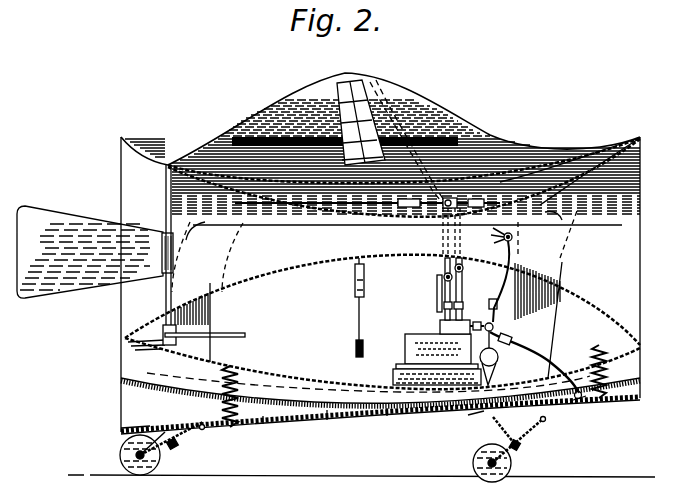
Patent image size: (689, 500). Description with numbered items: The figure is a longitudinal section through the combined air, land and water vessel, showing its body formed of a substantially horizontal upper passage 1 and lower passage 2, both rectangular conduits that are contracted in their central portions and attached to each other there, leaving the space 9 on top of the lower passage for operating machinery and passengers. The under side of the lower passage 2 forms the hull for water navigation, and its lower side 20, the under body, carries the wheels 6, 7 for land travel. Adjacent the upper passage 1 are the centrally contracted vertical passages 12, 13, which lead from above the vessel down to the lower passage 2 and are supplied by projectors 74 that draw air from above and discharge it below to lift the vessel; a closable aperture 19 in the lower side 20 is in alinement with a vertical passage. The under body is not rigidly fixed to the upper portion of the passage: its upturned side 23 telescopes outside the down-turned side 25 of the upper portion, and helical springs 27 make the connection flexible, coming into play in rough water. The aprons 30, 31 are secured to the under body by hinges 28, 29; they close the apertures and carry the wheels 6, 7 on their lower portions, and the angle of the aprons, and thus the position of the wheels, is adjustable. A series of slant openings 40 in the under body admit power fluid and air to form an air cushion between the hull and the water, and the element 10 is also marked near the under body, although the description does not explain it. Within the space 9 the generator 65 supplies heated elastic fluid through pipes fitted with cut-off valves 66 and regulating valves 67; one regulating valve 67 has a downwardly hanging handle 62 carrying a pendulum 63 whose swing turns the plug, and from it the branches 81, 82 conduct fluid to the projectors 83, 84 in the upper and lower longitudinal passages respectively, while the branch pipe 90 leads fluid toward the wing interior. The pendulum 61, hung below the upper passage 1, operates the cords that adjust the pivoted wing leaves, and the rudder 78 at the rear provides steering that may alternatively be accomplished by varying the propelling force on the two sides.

The upper passage 1 is at (380, 252).
The lower passage 2 is at (350, 424).
The wheel 6 is at (513, 461).
The wheel 7 is at (118, 458).
The space 9 is at (382, 322).
The keel brace 10 is at (476, 417).
The vertical passage 12 is at (207, 292).
The vertical passage 13 is at (548, 233).
The closable aperture 19 is at (152, 425).
The lower side 20 is at (420, 418).
The upturned side 23 is at (658, 381).
The down-turned side 25 is at (654, 354).
The helical spring 27 is at (224, 424).
The hinge 28 is at (546, 421).
The hinge 29 is at (201, 431).
The apron 30 is at (522, 432).
The apron 31 is at (175, 436).
The slant opening 40 is at (264, 421).
The pendulum 61 is at (432, 202).
The handle 62 is at (437, 292).
The pendulum 63 is at (496, 362).
The generator 65 is at (405, 346).
The cut-off valve 66 is at (443, 306).
The regulating valve 67 is at (443, 277).
The projector 74 is at (203, 221).
The rudder 78 is at (131, 255).
The branch pipe 81 is at (507, 278).
The branch pipe 82 is at (555, 364).
The projector 83 is at (502, 239).
The projector 84 is at (579, 399).
The branch pipe 90 is at (452, 180).